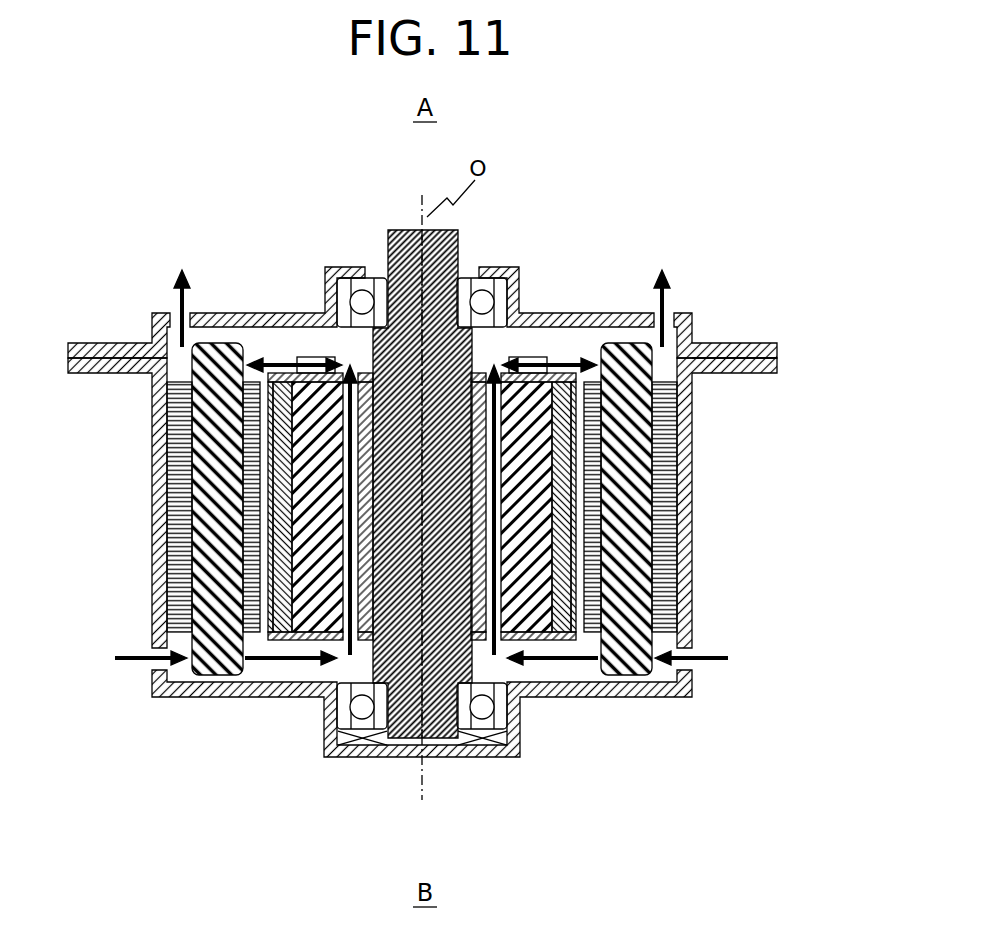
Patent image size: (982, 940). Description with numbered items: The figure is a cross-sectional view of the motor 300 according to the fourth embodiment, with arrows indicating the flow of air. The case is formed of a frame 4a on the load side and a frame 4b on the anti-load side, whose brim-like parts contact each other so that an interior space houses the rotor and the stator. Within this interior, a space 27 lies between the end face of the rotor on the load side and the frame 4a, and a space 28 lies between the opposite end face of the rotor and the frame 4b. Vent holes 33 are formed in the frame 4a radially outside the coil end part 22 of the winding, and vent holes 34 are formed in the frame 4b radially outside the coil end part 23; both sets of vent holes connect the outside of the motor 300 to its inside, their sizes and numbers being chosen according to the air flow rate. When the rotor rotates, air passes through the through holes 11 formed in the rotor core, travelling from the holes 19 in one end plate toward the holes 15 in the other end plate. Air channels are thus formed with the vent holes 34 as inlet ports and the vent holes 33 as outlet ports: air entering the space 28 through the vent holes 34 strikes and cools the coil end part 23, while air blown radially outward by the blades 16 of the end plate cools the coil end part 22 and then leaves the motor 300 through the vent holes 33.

The motor 300 is at (767, 119).
The frame 4a is at (449, 307).
The frame 4b is at (403, 557).
The through holes 11 is at (425, 511).
The holes 15 is at (383, 274).
The blades 16 is at (362, 279).
The holes 19 is at (485, 738).
The coil end part 22 is at (754, 398).
The coil end part 23 is at (674, 635).
The space 27 is at (444, 306).
The space 28 is at (239, 722).
The vent holes 33 is at (408, 284).
The vent holes 34 is at (398, 695).